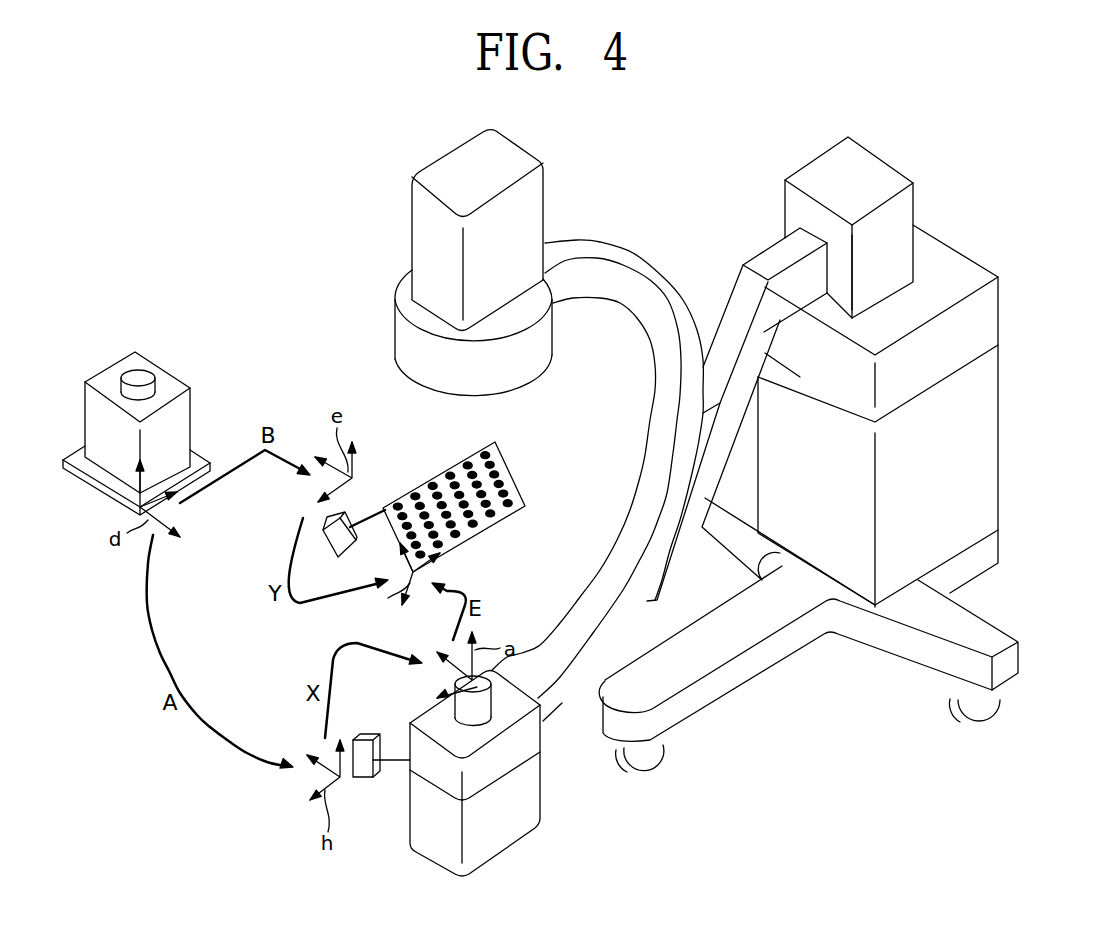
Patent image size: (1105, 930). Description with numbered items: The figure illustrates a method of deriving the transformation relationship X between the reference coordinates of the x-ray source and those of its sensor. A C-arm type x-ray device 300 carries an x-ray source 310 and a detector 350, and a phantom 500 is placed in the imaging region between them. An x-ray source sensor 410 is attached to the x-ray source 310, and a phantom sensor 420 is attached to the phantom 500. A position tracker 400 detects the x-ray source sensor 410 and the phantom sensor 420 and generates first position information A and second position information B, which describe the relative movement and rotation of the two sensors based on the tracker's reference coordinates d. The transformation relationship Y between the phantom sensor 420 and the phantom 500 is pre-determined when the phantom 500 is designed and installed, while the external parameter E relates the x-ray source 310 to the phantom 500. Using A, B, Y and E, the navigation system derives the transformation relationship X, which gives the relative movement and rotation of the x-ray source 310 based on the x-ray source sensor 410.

The x-ray device 300 is at (998, 432).
The x-ray source 310 is at (503, 847).
The detector 350 is at (395, 338).
The position tracker 400 is at (172, 380).
The x-ray source sensor 410 is at (365, 780).
The phantom sensor 420 is at (355, 513).
The phantom 500 is at (518, 478).